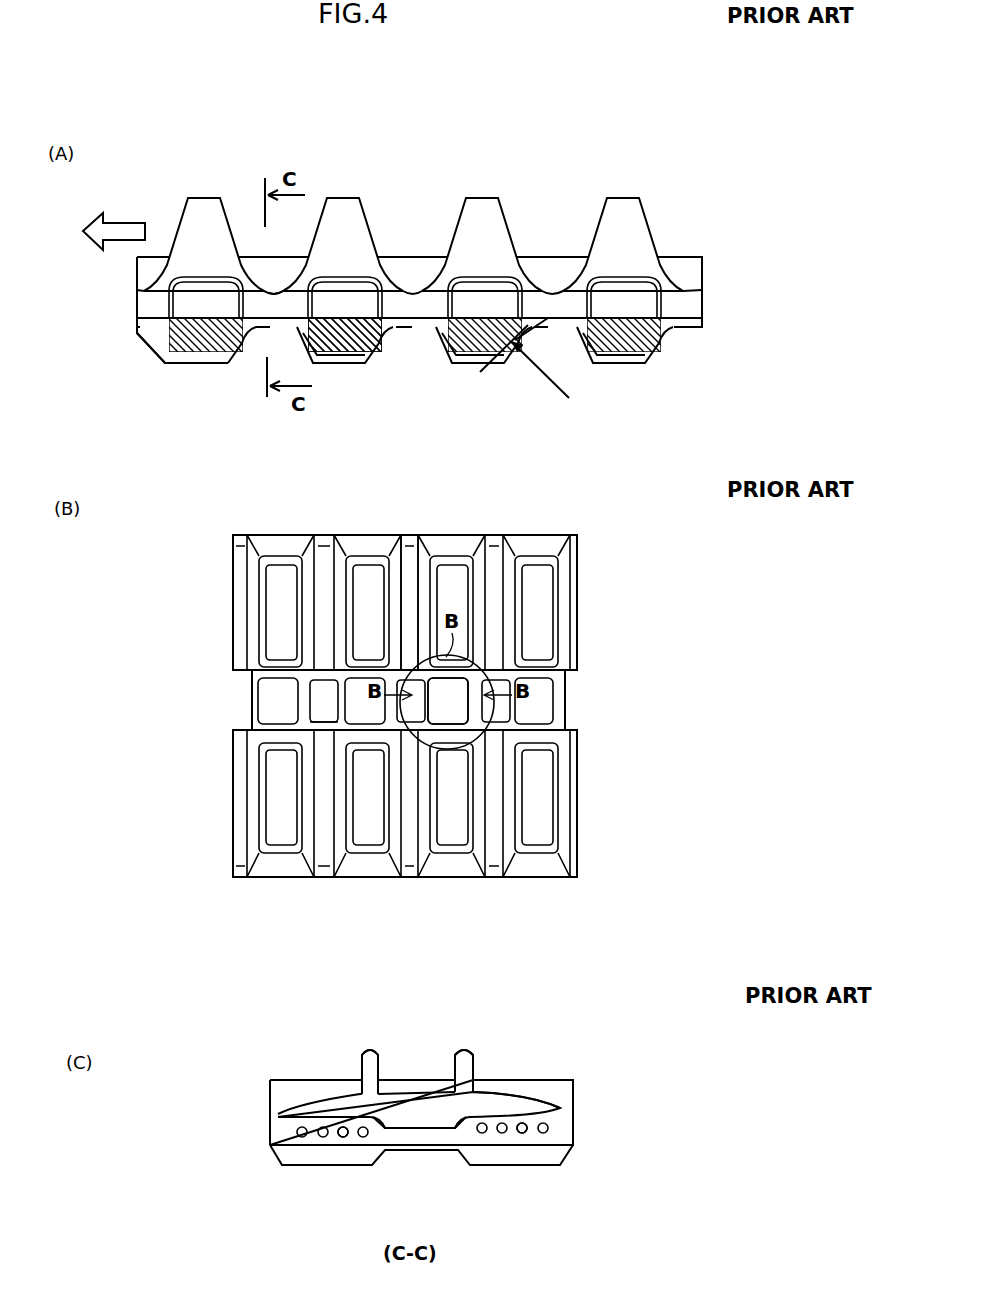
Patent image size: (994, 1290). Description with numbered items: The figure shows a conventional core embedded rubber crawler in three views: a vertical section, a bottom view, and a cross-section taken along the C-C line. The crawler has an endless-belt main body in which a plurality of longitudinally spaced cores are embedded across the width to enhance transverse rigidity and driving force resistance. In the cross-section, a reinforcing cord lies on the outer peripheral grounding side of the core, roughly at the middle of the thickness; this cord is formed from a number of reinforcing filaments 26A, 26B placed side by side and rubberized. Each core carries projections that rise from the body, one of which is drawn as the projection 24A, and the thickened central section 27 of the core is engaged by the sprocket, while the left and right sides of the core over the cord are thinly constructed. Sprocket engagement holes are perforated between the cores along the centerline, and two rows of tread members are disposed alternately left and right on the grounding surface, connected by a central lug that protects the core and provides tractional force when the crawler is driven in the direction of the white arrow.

The guide projection 24A is at (375, 1055).
The reinforcing filament 26A is at (343, 1138).
The reinforcing filament 26B is at (522, 1134).
The center portion of core bar 27 is at (397, 1131).